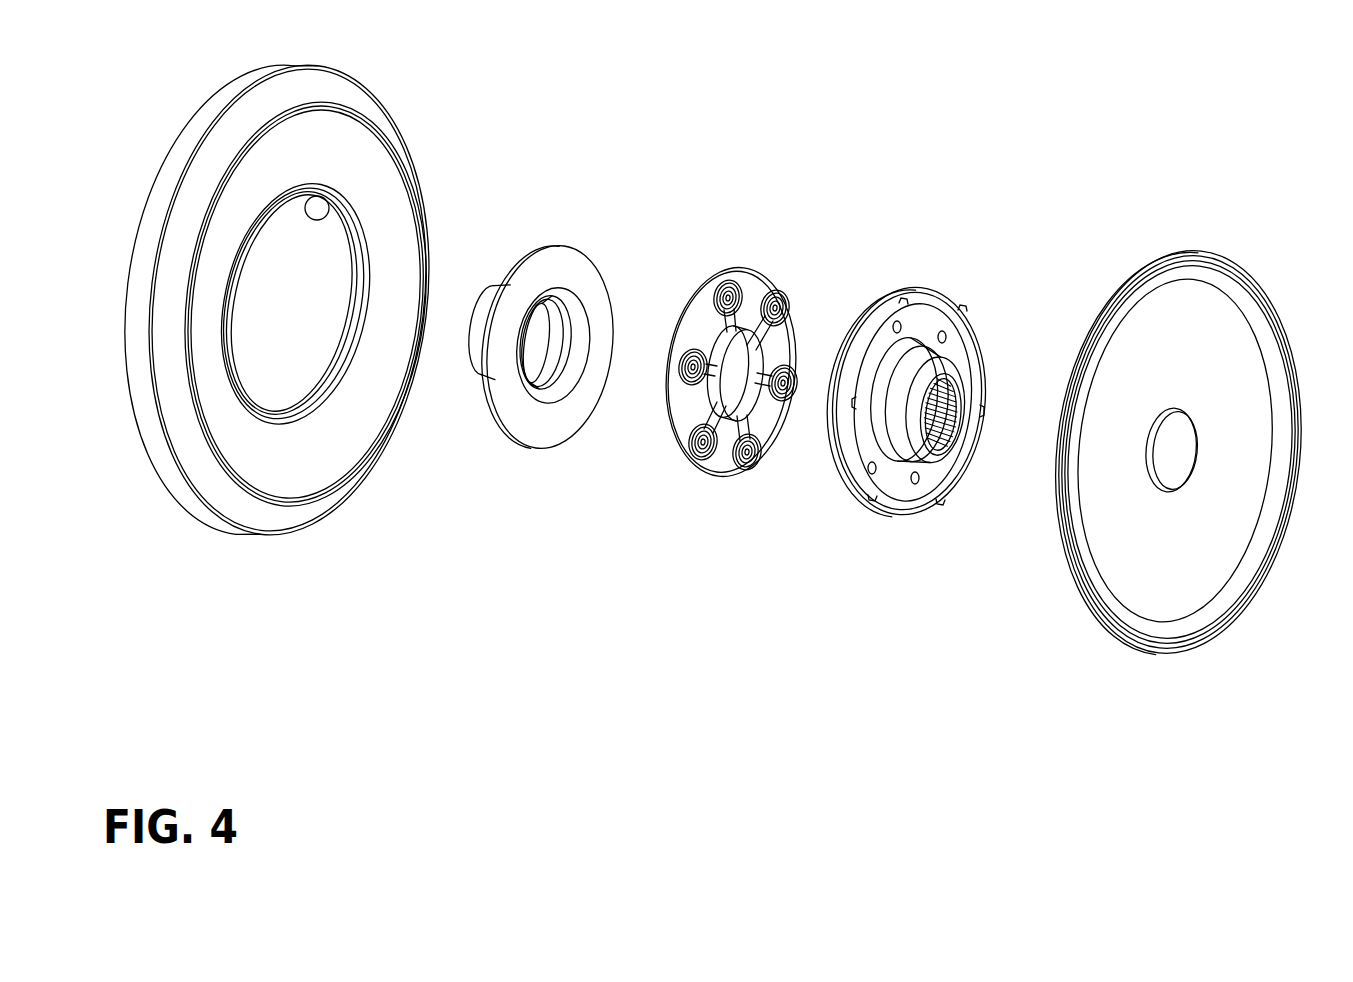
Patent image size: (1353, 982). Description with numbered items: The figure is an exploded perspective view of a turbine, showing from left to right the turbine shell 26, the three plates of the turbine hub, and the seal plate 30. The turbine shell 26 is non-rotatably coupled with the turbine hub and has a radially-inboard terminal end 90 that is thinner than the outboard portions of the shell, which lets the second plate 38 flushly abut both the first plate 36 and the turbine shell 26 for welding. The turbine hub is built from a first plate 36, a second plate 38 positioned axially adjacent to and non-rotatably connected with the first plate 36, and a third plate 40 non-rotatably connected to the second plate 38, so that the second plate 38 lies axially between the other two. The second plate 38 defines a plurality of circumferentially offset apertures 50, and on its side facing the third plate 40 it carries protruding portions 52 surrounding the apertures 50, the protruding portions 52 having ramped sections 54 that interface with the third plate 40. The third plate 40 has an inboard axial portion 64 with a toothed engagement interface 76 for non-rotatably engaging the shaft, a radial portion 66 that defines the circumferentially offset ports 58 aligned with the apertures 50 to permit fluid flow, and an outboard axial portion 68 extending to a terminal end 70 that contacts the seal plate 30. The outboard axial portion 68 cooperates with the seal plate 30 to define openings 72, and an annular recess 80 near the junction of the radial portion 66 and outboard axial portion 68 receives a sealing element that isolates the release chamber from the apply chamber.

The turbine shell 26 is at (364, 164).
The seal plate 30 is at (1196, 322).
The first plate 36 is at (555, 265).
The second plate 38 is at (749, 283).
The third plate 40 is at (922, 308).
The apertures 50 is at (738, 290).
The protruding portions 52 is at (722, 292).
The ramped sections 54 is at (714, 322).
The ports 58 is at (897, 322).
The inboard axial portion 64 is at (908, 435).
The radial portion 66 is at (922, 333).
The outboard axial portion 68 is at (975, 354).
The terminal end 70 is at (964, 475).
The openings 72 is at (988, 420).
The engagement interface 76 is at (948, 442).
The annular recess 80 is at (877, 305).
The radially-inboard terminal end 90 is at (318, 196).